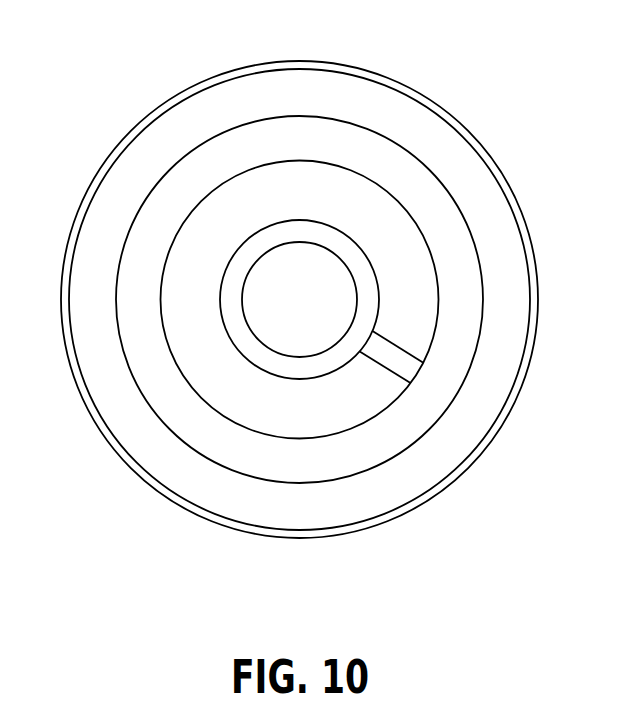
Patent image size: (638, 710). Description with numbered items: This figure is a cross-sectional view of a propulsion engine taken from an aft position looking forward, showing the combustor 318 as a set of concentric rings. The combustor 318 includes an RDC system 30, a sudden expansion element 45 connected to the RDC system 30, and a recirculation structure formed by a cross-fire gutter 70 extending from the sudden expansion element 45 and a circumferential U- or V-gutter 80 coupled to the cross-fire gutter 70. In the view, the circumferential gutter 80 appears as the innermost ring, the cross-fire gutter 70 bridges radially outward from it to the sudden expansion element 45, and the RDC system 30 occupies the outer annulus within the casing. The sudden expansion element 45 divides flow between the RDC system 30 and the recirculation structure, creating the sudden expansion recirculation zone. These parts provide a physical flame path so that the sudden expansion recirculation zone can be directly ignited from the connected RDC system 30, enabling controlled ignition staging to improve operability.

The combustor 318 is at (281, 291).
The RDC system 30 is at (299, 249).
The sudden expansion element 45 is at (362, 280).
The circumferential U- or V-gutter 80 is at (364, 228).
The cross-fire gutter 70 is at (347, 461).